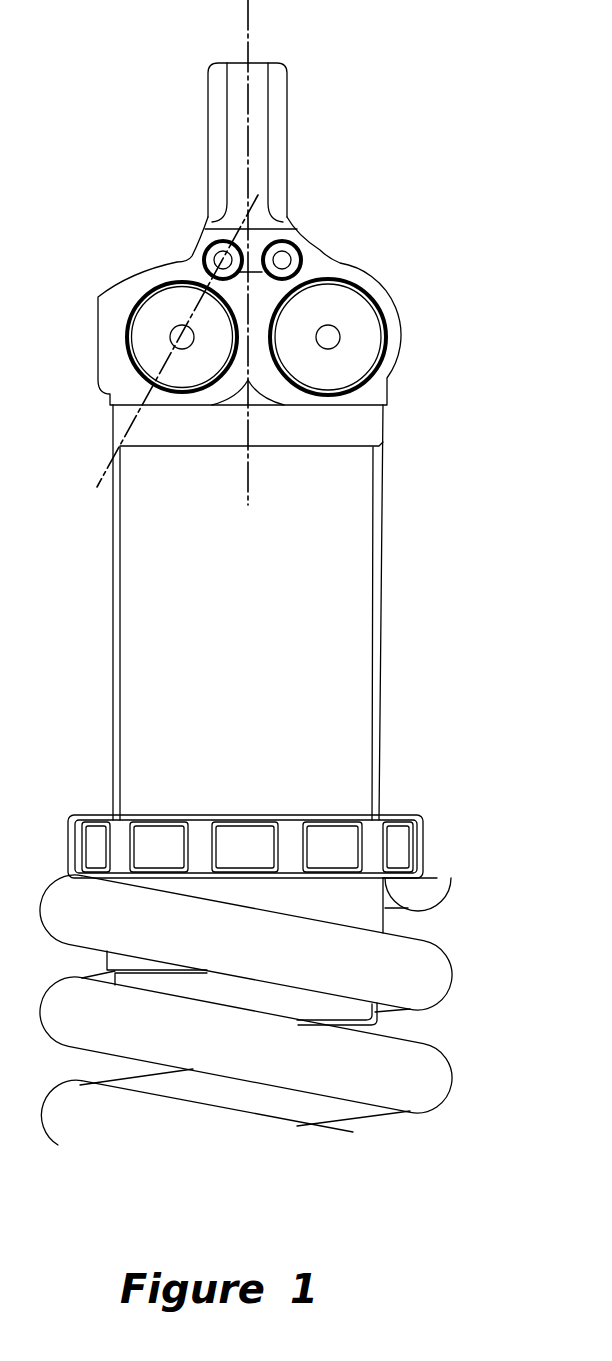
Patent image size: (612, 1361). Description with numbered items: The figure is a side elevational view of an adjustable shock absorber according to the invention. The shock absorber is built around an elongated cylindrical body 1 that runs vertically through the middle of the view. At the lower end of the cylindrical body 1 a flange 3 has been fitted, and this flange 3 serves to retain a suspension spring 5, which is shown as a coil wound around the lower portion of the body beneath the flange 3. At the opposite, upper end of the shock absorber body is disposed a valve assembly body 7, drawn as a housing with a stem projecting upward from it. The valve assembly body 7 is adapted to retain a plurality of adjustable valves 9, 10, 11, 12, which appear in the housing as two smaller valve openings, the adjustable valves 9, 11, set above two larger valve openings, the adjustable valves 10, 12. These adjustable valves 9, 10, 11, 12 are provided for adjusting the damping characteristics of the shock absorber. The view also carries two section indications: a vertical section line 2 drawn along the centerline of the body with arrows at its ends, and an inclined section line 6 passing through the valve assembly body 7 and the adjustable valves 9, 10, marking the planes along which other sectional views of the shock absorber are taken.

The elongated cylindrical body 1 is at (383, 577).
The section line 2- 2 is at (226, 14).
The flange 3 is at (427, 841).
The suspension spring 5 is at (437, 943).
The section line 6- 6 is at (251, 192).
The valve assembly body 7 is at (302, 234).
The adjustable valve 9 is at (198, 248).
The adjustable valve 10 is at (148, 314).
The adjustable valve 11 is at (313, 255).
The adjustable valve 12 is at (364, 314).